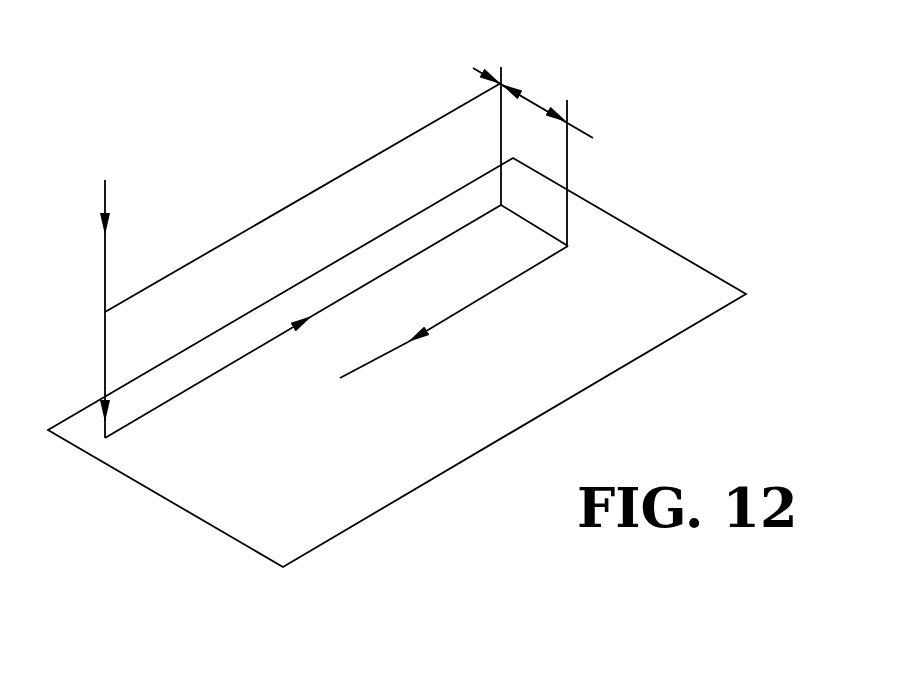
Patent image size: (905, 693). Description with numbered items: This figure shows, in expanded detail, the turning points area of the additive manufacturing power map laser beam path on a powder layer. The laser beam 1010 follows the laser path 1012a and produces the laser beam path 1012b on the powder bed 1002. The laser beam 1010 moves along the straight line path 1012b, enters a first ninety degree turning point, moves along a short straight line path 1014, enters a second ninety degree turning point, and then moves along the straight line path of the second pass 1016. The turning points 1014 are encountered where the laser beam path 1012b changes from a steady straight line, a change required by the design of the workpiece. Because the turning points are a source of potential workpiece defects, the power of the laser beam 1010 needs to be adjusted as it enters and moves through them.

The powder bed 1002 is at (362, 487).
The laser beam 1010 is at (105, 208).
The laser path 1012a is at (356, 168).
The laser beam path 1012b is at (402, 264).
The turning points 1014 is at (532, 102).
The second pass 1016 is at (437, 323).